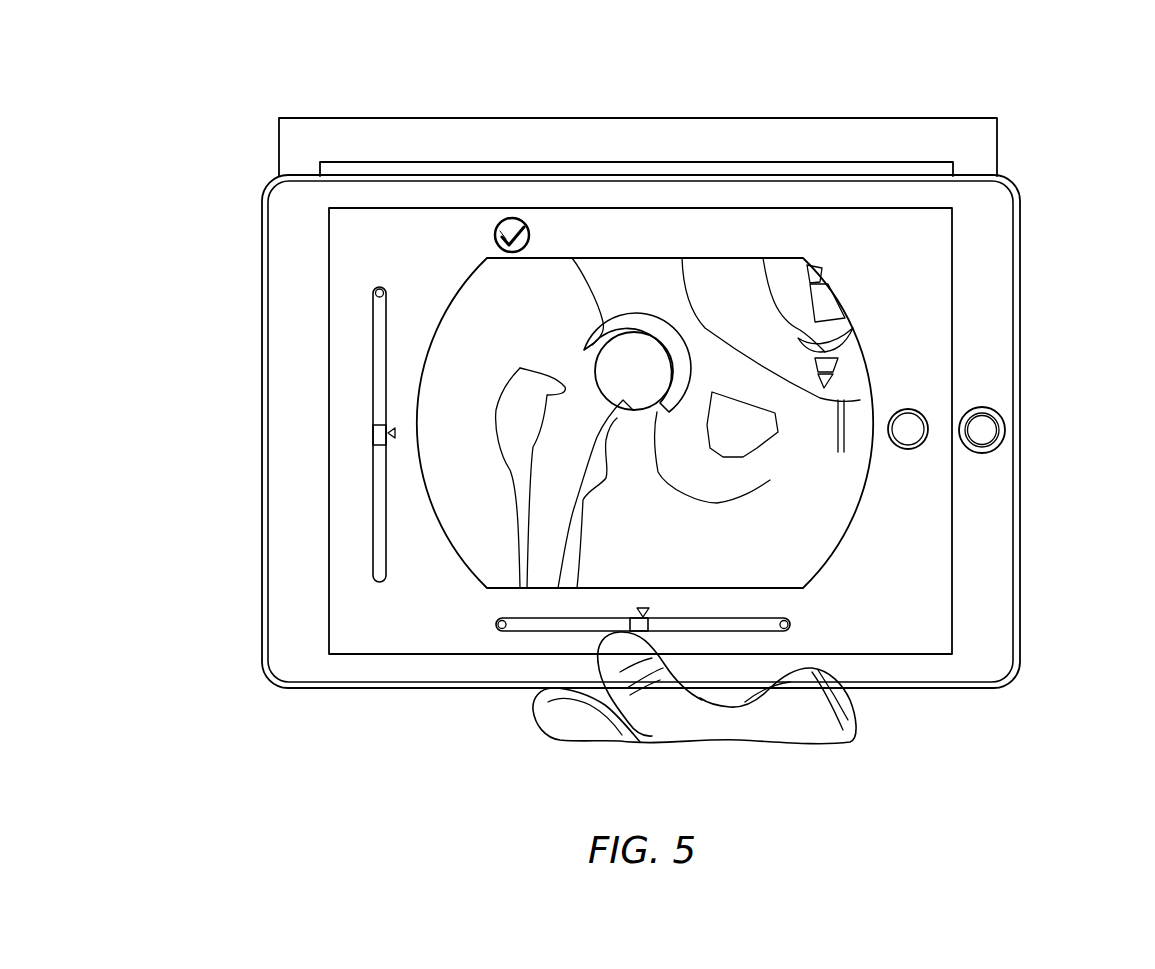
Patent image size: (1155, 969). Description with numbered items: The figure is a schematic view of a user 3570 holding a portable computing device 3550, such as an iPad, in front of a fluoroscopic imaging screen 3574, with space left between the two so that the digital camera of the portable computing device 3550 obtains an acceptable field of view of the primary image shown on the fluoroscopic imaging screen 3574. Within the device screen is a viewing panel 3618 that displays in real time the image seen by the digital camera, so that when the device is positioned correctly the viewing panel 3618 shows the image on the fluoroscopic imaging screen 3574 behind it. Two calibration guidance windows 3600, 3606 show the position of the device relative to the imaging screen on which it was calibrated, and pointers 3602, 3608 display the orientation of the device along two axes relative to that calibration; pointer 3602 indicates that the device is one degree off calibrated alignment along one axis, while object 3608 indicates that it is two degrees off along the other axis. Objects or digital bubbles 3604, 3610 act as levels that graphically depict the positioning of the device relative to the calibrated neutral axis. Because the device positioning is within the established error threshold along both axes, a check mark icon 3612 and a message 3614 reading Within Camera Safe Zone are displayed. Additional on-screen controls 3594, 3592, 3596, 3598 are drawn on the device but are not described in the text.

The fluoroscopic imaging screen 3574 is at (868, 118).
The portable computing device 3550 is at (1022, 248).
The check mark icon 3612 is at (503, 225).
The message 3614 is at (640, 228).
The calibration guidance window 3606 is at (384, 288).
The digital bubble 3610 is at (372, 435).
The pointer 3608 is at (392, 440).
The viewing panel 3618 is at (538, 328).
The camera button 3594 is at (907, 410).
The home button 3592 is at (985, 428).
The recalibrate button 3596 is at (922, 520).
The cancel button 3598 is at (922, 597).
The calibration guidance window 3600 is at (790, 625).
The pointer 3602 is at (645, 613).
The digital bubble 3604 is at (638, 612).
The user 3570 is at (817, 723).